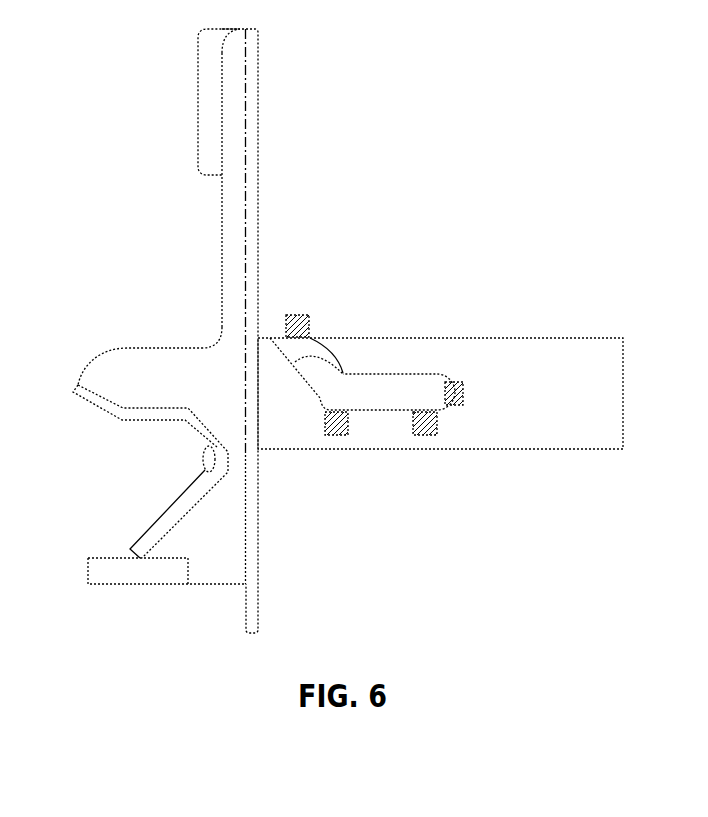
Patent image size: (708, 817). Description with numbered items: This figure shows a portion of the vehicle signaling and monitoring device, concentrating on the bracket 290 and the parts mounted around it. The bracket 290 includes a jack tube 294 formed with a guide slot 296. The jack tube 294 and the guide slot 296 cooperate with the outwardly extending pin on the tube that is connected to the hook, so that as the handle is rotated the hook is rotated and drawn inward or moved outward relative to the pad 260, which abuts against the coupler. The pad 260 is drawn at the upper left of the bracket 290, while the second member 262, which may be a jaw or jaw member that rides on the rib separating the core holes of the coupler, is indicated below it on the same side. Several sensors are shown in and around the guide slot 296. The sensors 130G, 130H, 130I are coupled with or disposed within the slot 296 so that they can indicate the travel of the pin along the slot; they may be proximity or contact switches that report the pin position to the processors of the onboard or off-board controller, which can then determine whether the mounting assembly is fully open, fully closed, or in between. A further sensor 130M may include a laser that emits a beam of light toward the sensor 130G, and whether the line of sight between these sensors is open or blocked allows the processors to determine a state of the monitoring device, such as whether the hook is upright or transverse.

The pad 260 is at (205, 67).
The second member 262 is at (130, 493).
The bracket 290 is at (177, 390).
The jack tube 294 is at (575, 406).
The guide slot 296 is at (393, 390).
The sensor 130G is at (297, 316).
The sensor 130H is at (337, 435).
The sensor 130I is at (427, 435).
The sensor 130M is at (463, 392).